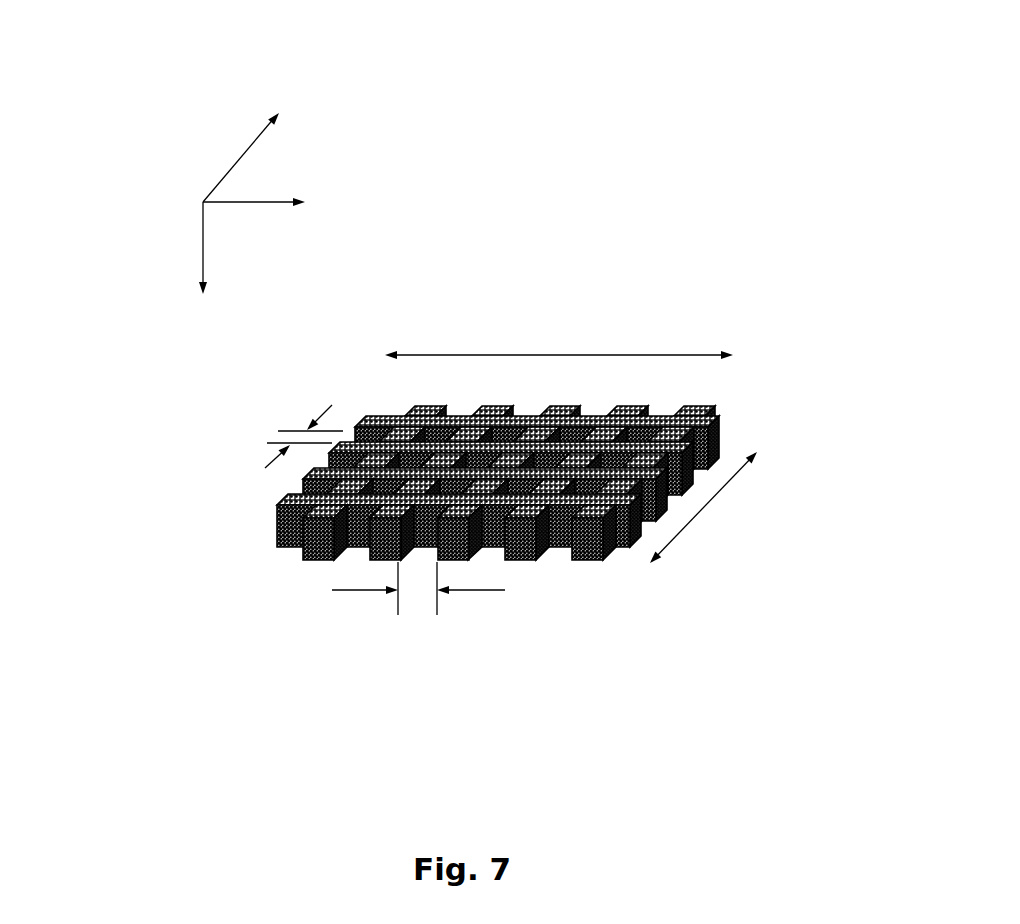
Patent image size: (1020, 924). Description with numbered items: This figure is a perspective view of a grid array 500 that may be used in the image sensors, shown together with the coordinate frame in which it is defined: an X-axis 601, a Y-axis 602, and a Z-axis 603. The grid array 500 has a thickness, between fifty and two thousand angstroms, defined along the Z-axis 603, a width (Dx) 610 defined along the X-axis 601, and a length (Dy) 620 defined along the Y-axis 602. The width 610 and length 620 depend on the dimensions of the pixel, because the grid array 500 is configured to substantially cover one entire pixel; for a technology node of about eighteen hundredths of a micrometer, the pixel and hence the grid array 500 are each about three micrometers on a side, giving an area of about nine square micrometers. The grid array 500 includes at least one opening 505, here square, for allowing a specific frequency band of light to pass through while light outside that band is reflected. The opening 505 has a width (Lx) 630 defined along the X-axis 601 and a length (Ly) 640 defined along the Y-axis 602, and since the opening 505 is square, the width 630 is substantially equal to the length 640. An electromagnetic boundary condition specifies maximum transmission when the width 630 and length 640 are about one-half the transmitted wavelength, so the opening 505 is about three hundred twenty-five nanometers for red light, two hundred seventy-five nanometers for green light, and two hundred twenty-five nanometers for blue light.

The grid array 500 is at (828, 263).
The opening 505 is at (637, 433).
The X-axis 601 is at (352, 197).
The Y-axis 602 is at (282, 92).
The Z-axis 603 is at (157, 250).
The width (Dx) 610 is at (574, 303).
The length (Dy) 620 is at (772, 510).
The width (Lx) 630 is at (393, 655).
The length (Ly) 640 is at (212, 432).